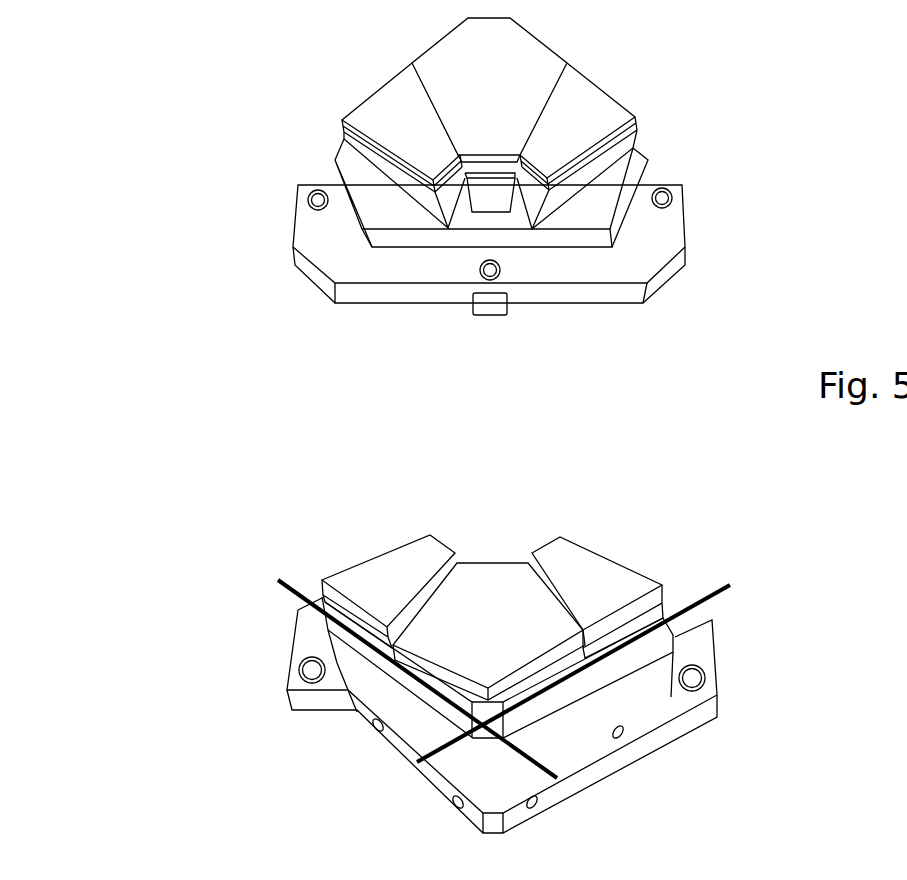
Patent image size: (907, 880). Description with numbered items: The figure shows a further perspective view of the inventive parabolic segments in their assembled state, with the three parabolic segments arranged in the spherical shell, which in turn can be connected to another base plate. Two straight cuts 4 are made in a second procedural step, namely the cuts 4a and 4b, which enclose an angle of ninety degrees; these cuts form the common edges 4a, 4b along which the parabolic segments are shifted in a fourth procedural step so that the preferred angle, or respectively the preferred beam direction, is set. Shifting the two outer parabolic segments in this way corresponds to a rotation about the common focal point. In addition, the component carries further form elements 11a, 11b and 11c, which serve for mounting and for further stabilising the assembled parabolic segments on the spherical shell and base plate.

The form element 11a is at (492, 193).
The form element 11b is at (618, 150).
The form element 11c is at (367, 155).
The straight cut 4 is at (504, 679).
The straight cut 4a is at (287, 603).
The straight cut 4b is at (717, 608).